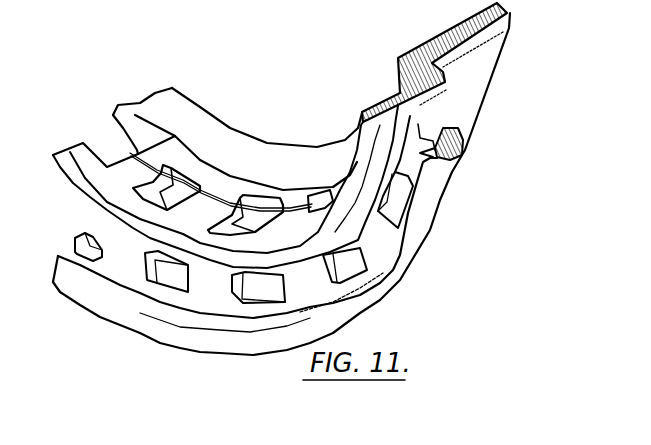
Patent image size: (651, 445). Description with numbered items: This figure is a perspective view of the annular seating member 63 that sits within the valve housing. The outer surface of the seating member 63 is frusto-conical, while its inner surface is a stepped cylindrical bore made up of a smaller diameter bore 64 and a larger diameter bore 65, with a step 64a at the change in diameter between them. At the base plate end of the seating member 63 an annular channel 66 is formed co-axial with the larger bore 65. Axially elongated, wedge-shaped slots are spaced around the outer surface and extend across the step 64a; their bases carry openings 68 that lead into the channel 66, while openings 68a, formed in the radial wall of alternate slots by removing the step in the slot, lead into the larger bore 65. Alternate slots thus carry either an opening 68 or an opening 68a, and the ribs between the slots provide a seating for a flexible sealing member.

The seating member 63 is at (498, 108).
The smaller diameter bore 64 is at (250, 150).
The step 64a is at (161, 146).
The larger diameter bore 65 is at (80, 155).
The annular channel 66 is at (200, 318).
The openings 68 is at (355, 262).
The openings 68a is at (258, 207).